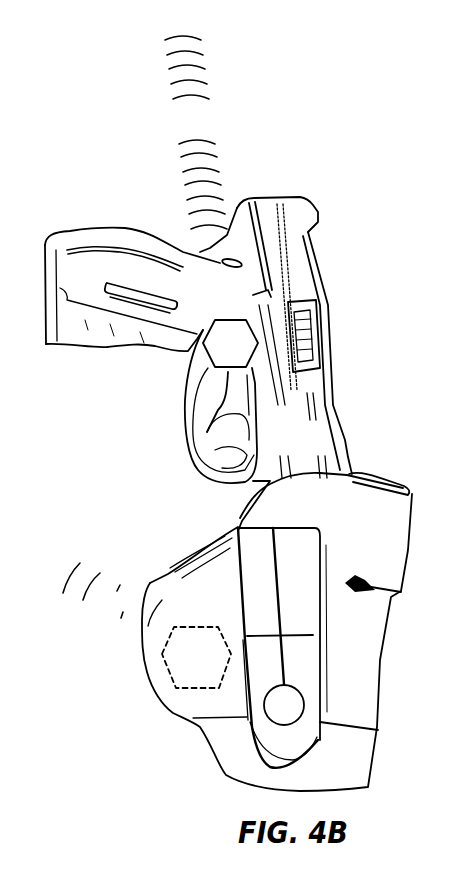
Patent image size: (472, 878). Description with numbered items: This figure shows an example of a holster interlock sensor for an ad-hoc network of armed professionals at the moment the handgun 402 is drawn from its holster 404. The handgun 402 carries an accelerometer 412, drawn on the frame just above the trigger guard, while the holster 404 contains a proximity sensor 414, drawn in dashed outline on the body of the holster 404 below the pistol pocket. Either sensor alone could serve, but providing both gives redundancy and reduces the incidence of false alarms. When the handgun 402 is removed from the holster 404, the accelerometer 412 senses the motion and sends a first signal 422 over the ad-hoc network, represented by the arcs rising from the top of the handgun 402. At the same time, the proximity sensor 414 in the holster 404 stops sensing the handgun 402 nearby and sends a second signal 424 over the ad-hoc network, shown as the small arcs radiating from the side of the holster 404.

The handgun 402 is at (303, 445).
The holster 404 is at (378, 540).
The accelerometer 412 is at (246, 354).
The proximity sensor 414 is at (217, 669).
The first signal 422 is at (212, 133).
The second signal 424 is at (132, 609).